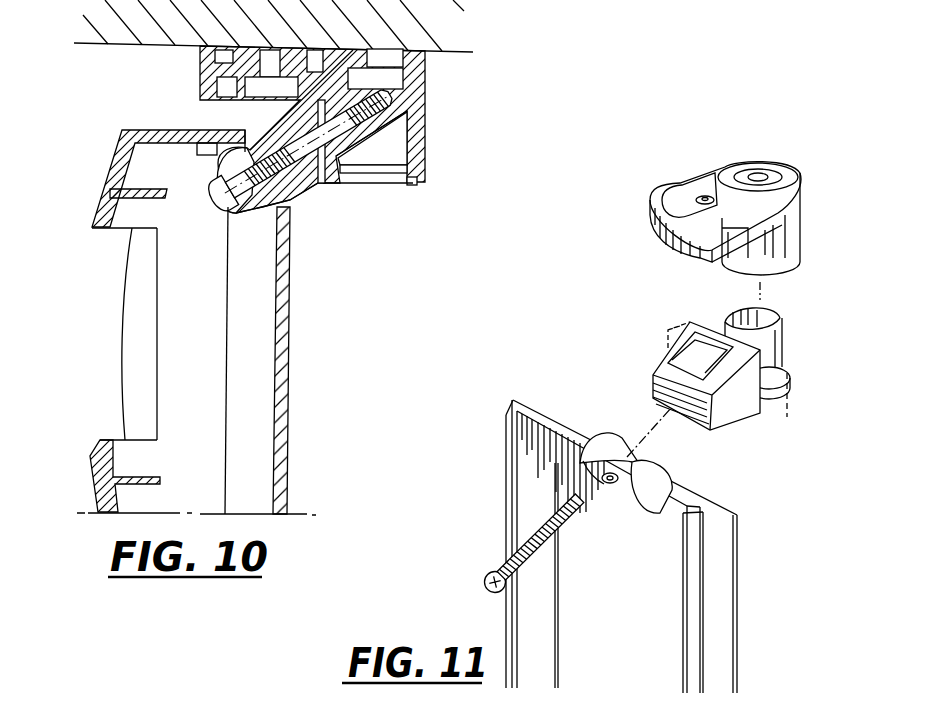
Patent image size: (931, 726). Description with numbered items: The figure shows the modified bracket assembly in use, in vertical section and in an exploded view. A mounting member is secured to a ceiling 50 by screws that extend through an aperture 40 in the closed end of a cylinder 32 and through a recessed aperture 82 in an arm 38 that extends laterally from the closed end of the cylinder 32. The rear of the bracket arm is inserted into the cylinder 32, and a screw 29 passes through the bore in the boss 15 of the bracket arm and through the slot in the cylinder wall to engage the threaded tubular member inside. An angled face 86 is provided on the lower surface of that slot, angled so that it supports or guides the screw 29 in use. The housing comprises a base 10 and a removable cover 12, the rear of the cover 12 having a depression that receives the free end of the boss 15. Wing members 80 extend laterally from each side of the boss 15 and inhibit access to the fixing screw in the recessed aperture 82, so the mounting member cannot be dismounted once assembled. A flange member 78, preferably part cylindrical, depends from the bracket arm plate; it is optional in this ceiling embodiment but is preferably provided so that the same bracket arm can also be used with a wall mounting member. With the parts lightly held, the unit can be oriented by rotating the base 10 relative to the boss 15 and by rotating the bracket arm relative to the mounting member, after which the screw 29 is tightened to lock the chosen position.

In FIG. 10, the base 10 is at (283, 372).
In FIG. 11, the base 10 is at (723, 590).
In FIG. 10, the removable cover 12 is at (110, 157).
In FIG. 10, the boss 15 is at (303, 180).
In FIG. 10, the screw 29 is at (227, 200).
In FIG. 11, the screw 29 is at (548, 547).
In FIG. 11, the cylinder 32 is at (785, 250).
In FIG. 11, the arm 38 is at (670, 238).
In FIG. 10, the aperture 40 is at (390, 63).
In FIG. 10, the ceiling 50 is at (176, 33).
In FIG. 11, the flange member 78 is at (768, 425).
In FIG. 11, the wing members 80 is at (682, 333).
In FIG. 10, the recessed aperture 82 is at (265, 95).
In FIG. 10, the angled face 86 is at (352, 182).